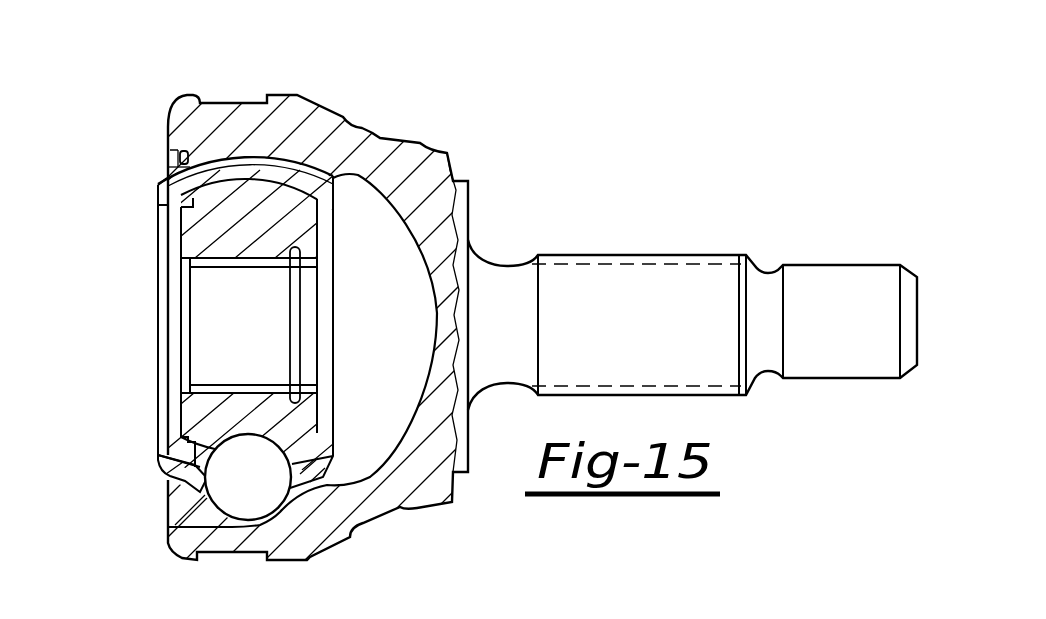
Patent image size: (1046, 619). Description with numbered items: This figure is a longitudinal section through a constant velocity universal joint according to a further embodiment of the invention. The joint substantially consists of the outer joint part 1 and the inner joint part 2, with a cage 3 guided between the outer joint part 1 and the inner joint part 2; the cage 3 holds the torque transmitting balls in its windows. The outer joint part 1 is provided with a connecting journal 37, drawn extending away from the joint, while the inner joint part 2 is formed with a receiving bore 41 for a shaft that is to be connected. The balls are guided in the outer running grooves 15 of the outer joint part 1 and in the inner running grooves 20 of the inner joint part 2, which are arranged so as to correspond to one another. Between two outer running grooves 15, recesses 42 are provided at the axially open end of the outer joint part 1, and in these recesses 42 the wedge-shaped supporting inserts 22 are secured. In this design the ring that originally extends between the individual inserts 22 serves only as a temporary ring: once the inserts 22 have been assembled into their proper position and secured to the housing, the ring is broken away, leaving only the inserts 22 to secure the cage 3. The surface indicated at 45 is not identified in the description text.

The outer race housing 1 is at (433, 205).
The inner race 2 is at (230, 220).
The cage 3 is at (252, 163).
The retaining lip 15 is at (195, 508).
The ball 20 is at (222, 432).
The seal 22 is at (183, 163).
The shaft 37 is at (637, 313).
The bore 41 is at (230, 300).
The cover plate 42 is at (170, 148).
The spherical surface 45 is at (306, 157).